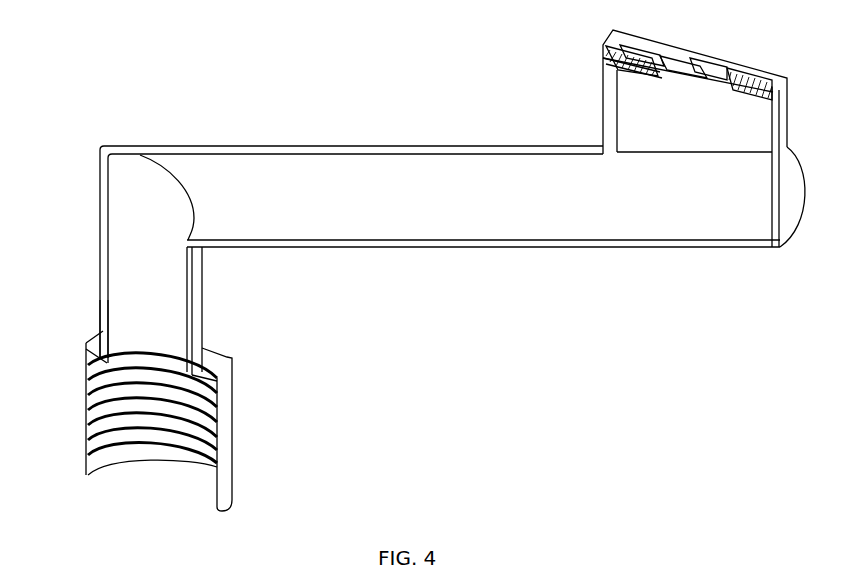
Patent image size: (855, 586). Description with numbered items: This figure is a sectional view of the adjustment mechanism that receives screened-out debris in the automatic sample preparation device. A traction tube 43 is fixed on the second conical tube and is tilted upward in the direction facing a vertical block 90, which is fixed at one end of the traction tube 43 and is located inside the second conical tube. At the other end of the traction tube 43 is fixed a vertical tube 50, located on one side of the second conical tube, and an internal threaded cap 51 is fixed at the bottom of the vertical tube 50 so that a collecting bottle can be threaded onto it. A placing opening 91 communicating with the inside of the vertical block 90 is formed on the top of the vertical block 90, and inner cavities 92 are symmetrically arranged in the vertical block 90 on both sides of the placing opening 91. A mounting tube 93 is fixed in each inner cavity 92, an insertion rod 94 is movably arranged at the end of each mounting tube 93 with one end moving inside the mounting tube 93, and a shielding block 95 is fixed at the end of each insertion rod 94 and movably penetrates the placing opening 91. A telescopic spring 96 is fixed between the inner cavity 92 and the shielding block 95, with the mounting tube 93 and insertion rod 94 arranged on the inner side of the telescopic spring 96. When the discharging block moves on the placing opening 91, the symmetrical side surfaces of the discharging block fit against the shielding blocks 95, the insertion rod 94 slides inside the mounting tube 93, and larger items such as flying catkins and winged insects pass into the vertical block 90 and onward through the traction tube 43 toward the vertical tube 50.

The traction tube 43 is at (377, 147).
The vertical tube 50 is at (133, 272).
The internal threaded cap 51 is at (170, 428).
The vertical block 90 is at (602, 115).
The placing opening 91 is at (727, 62).
The inner cavity 92 is at (603, 60).
The mounting tube 93 is at (602, 50).
The insertion rod 94 is at (663, 57).
The shielding block 95 is at (693, 60).
The telescopic spring 96 is at (637, 53).